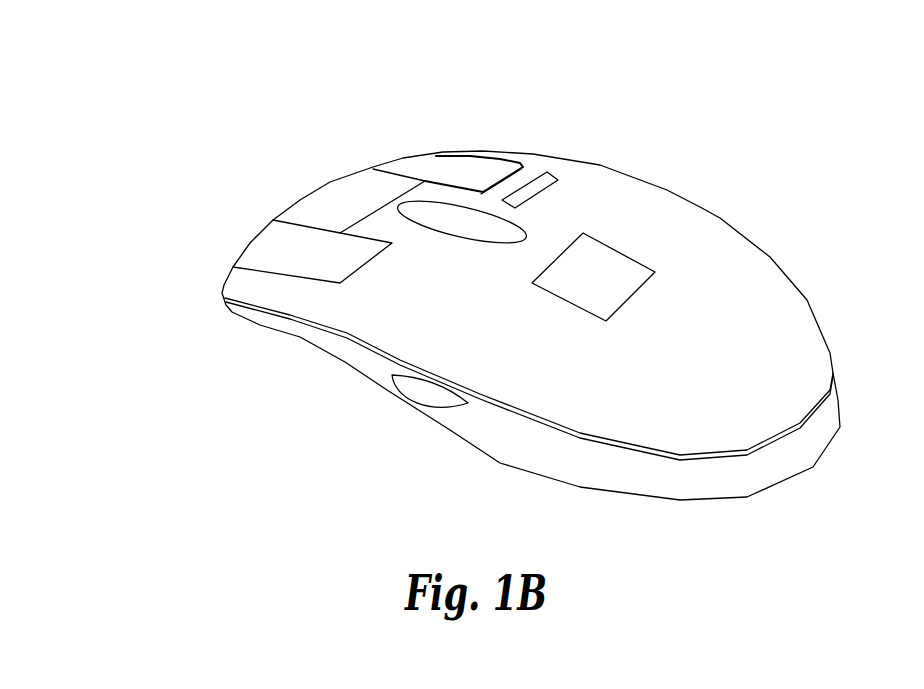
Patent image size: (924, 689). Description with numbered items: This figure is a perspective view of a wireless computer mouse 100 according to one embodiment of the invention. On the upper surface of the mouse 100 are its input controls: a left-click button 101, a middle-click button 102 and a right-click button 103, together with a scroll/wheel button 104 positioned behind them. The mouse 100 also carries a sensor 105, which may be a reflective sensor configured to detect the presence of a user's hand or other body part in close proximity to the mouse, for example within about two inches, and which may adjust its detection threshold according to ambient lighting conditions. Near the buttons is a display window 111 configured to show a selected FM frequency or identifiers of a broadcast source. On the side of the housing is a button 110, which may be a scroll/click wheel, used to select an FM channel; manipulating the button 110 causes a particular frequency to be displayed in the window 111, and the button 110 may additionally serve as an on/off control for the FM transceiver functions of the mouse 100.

The wireless computer mouse 100 is at (662, 495).
The left-click button 101 is at (275, 245).
The middle-click button 102 is at (357, 185).
The right-click button 103 is at (442, 162).
The scroll/wheel button 104 is at (483, 245).
The sensor 105 is at (638, 267).
The button 110 is at (410, 405).
The display window 111 is at (548, 188).